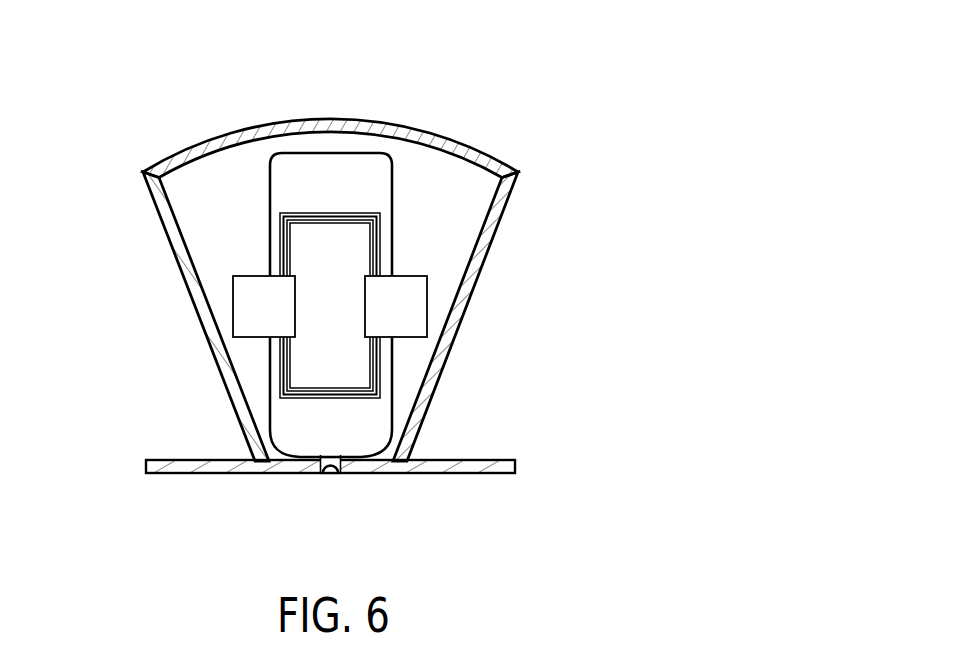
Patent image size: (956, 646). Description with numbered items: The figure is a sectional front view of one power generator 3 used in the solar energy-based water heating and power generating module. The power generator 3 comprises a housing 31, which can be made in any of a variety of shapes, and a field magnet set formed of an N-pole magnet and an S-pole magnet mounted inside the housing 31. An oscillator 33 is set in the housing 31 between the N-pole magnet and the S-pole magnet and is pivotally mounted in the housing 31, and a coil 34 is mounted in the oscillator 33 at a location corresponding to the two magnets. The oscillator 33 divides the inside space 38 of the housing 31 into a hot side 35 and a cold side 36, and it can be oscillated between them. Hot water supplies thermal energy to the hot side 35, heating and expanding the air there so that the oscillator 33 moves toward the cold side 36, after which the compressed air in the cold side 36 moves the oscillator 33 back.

The power generator 3 is at (337, 252).
The housing 31 is at (470, 278).
The oscillator 33 is at (297, 176).
The coil 34 is at (382, 347).
The hot side 35 is at (207, 272).
The cold side 36 is at (412, 382).
The inside space 38 is at (347, 142).